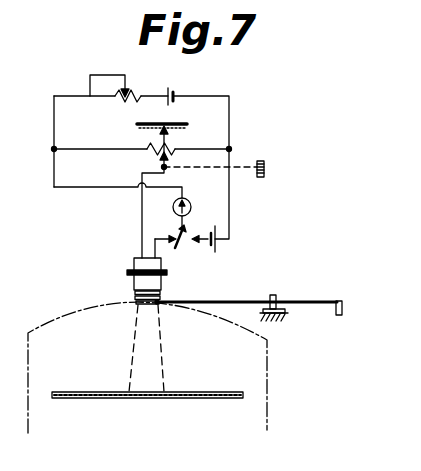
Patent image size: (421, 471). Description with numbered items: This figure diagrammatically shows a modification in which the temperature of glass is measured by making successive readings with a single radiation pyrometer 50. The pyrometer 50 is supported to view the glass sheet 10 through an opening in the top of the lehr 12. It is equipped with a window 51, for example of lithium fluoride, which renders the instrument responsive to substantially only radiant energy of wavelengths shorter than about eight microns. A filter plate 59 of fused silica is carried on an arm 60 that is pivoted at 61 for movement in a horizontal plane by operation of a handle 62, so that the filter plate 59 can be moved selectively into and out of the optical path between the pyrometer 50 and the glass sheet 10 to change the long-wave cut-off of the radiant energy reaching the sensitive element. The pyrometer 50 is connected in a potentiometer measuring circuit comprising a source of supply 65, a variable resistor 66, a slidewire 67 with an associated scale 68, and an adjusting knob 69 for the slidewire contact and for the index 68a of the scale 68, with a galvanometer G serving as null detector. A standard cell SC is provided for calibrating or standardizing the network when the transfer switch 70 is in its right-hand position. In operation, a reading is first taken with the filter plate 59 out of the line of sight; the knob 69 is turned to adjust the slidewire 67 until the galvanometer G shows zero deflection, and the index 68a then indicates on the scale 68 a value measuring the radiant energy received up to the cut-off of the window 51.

The glass sheet 10 is at (183, 399).
The lehr 12 is at (267, 413).
The radiation pyrometer 50 is at (128, 270).
The window 51 is at (161, 292).
The filter plate 59 is at (160, 304).
The arm 60 is at (216, 301).
The pivot 61 is at (276, 297).
The handle 62 is at (343, 312).
The source of supply 65 is at (176, 96).
The variable resistor 66 is at (123, 100).
The slidewire 67 is at (143, 151).
The scale 68 is at (184, 123).
The index 68a is at (168, 137).
The adjusting knob 69 is at (264, 163).
The transfer switch 70 is at (172, 234).
The galvanometer G is at (191, 202).
The standard cell SC is at (217, 244).